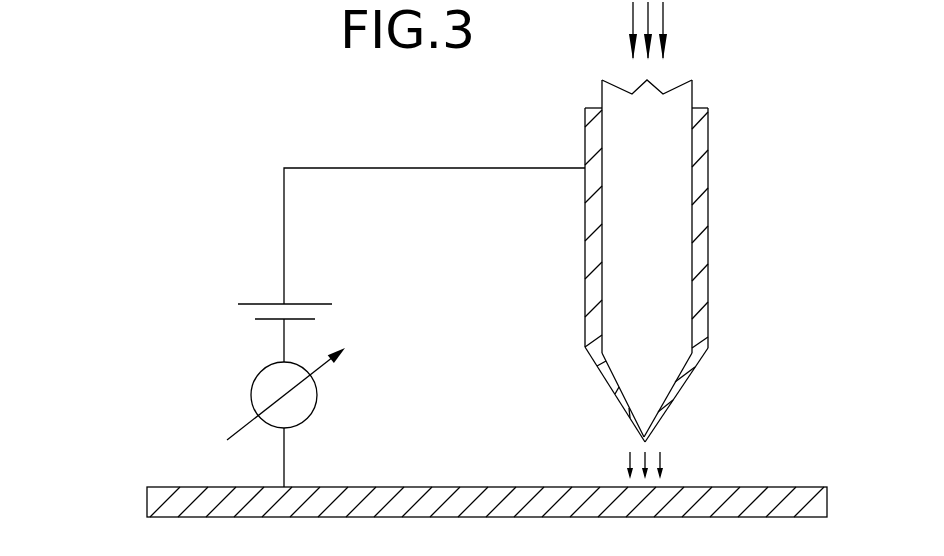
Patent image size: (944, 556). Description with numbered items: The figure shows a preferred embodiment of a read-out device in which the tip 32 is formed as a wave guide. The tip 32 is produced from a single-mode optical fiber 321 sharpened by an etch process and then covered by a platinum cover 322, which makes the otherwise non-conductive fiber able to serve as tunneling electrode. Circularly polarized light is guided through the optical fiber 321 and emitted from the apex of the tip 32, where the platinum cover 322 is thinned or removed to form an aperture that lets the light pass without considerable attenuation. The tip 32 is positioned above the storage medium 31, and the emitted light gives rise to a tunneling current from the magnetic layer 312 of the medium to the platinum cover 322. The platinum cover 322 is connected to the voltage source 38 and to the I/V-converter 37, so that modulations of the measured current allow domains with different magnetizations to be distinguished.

The storage medium 31 is at (472, 458).
The magnetic layer 312 is at (775, 492).
The tip 32 is at (713, 232).
The optical fiber 321 is at (677, 80).
The platinum cover 322 is at (710, 293).
The I/V-converter 37 is at (250, 387).
The voltage source 38 is at (258, 304).